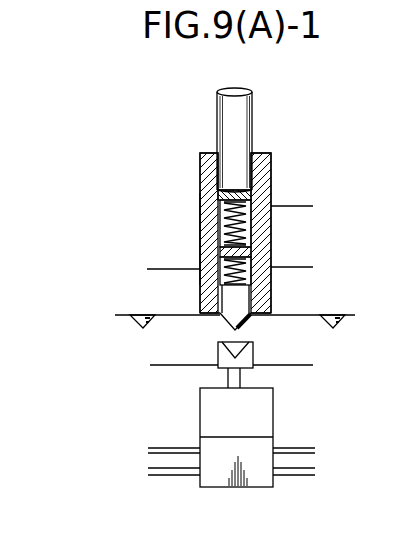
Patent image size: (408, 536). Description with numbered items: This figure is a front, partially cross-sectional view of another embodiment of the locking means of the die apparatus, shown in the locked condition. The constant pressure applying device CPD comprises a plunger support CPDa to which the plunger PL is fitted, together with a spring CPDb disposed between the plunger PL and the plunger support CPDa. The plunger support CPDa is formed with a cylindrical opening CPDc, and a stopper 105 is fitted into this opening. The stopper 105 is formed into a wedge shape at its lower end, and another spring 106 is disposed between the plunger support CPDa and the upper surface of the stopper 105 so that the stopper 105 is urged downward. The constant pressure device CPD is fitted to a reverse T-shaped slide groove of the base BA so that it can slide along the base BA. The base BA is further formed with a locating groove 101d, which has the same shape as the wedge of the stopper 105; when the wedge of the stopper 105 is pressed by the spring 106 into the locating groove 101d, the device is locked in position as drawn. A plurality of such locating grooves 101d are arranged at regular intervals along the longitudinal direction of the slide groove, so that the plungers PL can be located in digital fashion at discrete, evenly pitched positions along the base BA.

The plunger PL is at (252, 118).
The base BA is at (292, 217).
The constant pressure applying device CPD is at (82, 201).
The plunger support CPDa is at (200, 205).
The spring CPDb is at (200, 237).
The cylindrical opening CPDc is at (271, 257).
The spring 106 is at (200, 275).
The stopper 105 is at (232, 323).
The locating groove 101d is at (143, 330).